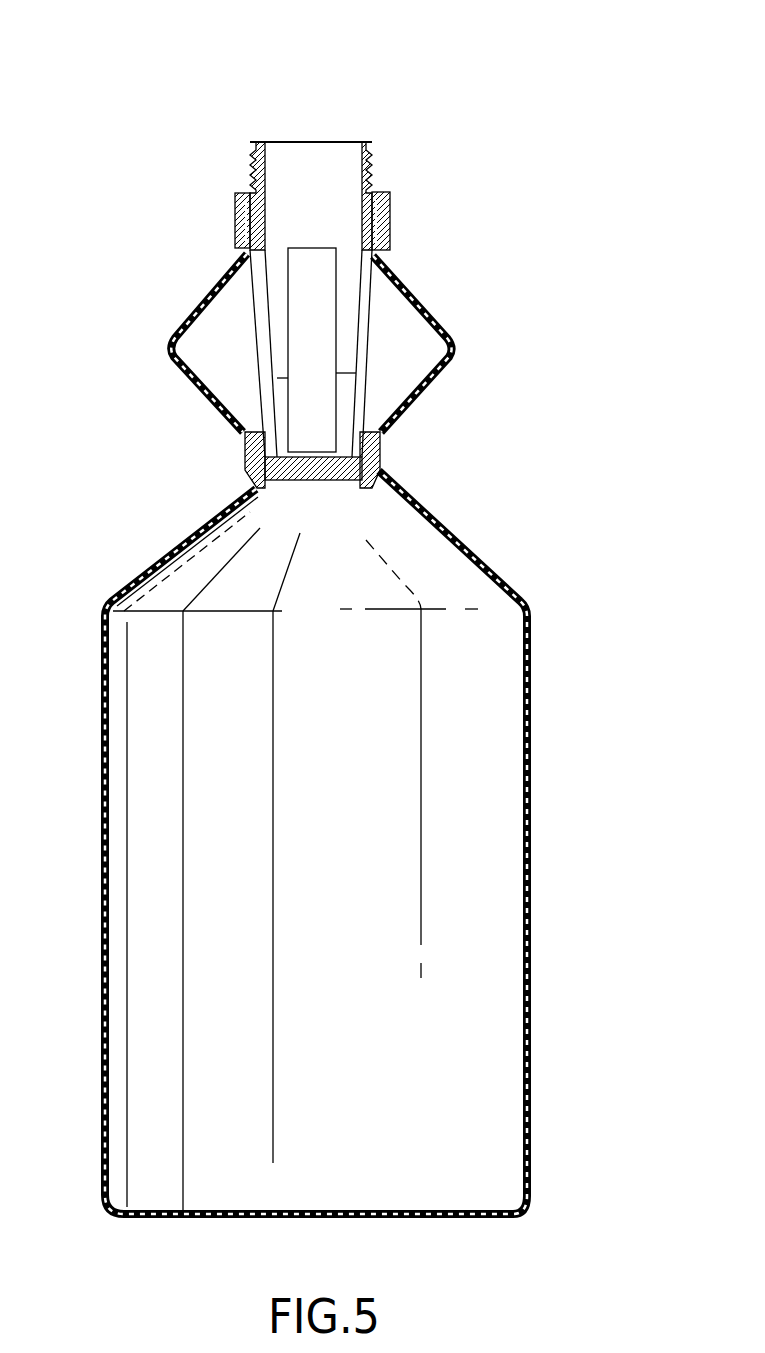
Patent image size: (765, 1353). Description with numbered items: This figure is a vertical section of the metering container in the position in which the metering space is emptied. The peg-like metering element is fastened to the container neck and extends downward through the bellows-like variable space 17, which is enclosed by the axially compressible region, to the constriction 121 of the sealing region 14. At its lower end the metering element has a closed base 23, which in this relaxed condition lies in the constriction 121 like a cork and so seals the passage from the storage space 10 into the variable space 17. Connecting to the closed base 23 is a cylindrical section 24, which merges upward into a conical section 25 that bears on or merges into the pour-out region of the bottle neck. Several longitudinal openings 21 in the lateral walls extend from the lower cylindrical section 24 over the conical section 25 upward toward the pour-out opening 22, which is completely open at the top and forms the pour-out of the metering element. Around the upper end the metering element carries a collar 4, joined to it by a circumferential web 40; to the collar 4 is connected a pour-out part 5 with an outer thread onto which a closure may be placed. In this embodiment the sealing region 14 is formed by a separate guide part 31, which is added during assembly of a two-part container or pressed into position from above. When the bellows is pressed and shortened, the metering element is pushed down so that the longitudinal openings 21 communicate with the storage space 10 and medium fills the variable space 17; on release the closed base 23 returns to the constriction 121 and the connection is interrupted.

The storage space 10 is at (328, 882).
The sealing region 14 is at (364, 288).
The constriction 121 is at (364, 288).
The variable space 17 is at (418, 325).
The pour-out opening 22 is at (353, 125).
The pour-out part 5 is at (371, 163).
The circumferential web 40 is at (248, 192).
The collar 4 is at (393, 217).
The conical section 25 is at (360, 318).
The cylindrical section 24 is at (355, 397).
The longitudinal openings 21 is at (300, 380).
The guide part 31 is at (250, 445).
The closed base 23 is at (328, 482).